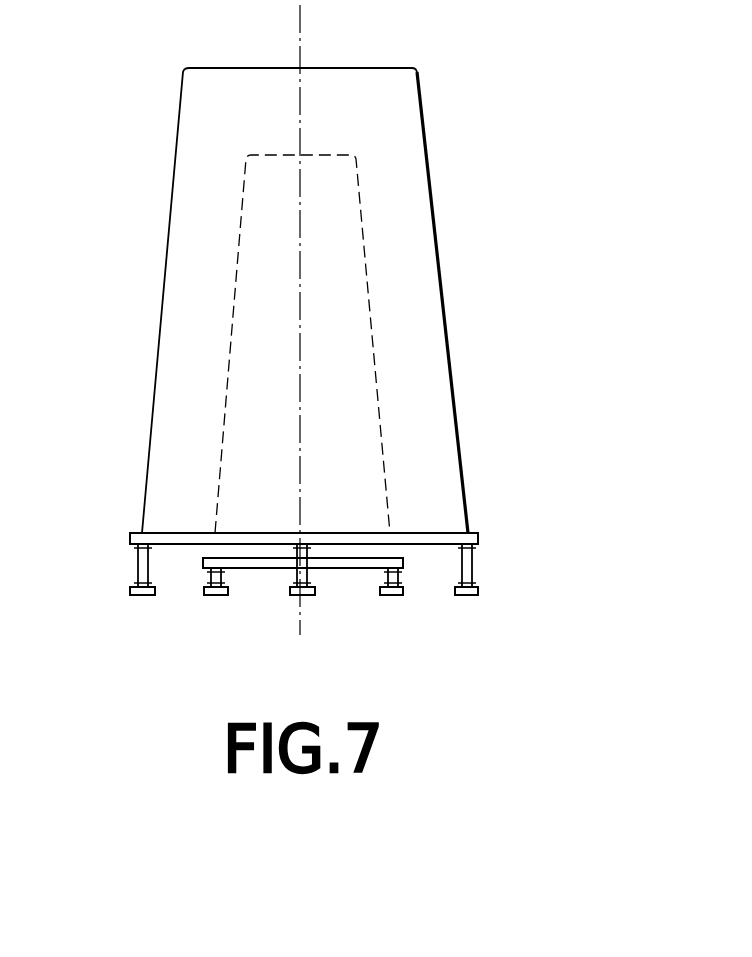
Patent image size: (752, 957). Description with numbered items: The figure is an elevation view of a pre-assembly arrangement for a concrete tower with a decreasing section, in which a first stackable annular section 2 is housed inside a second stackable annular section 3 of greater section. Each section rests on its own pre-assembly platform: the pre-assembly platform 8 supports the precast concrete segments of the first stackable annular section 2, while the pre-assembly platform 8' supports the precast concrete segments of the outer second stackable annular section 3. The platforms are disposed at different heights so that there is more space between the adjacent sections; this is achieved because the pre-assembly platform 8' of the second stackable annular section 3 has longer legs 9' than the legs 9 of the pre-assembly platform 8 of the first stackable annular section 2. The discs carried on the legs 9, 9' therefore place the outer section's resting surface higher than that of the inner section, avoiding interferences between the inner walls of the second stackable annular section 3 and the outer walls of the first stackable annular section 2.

The second stackable annular section 3 is at (440, 252).
The first stackable annular section 2 is at (351, 556).
The pre-assembly platform 8 is at (303, 625).
The pre-assembly platform 8' is at (370, 484).
The legs 9 is at (448, 608).
The legs 9' is at (203, 621).